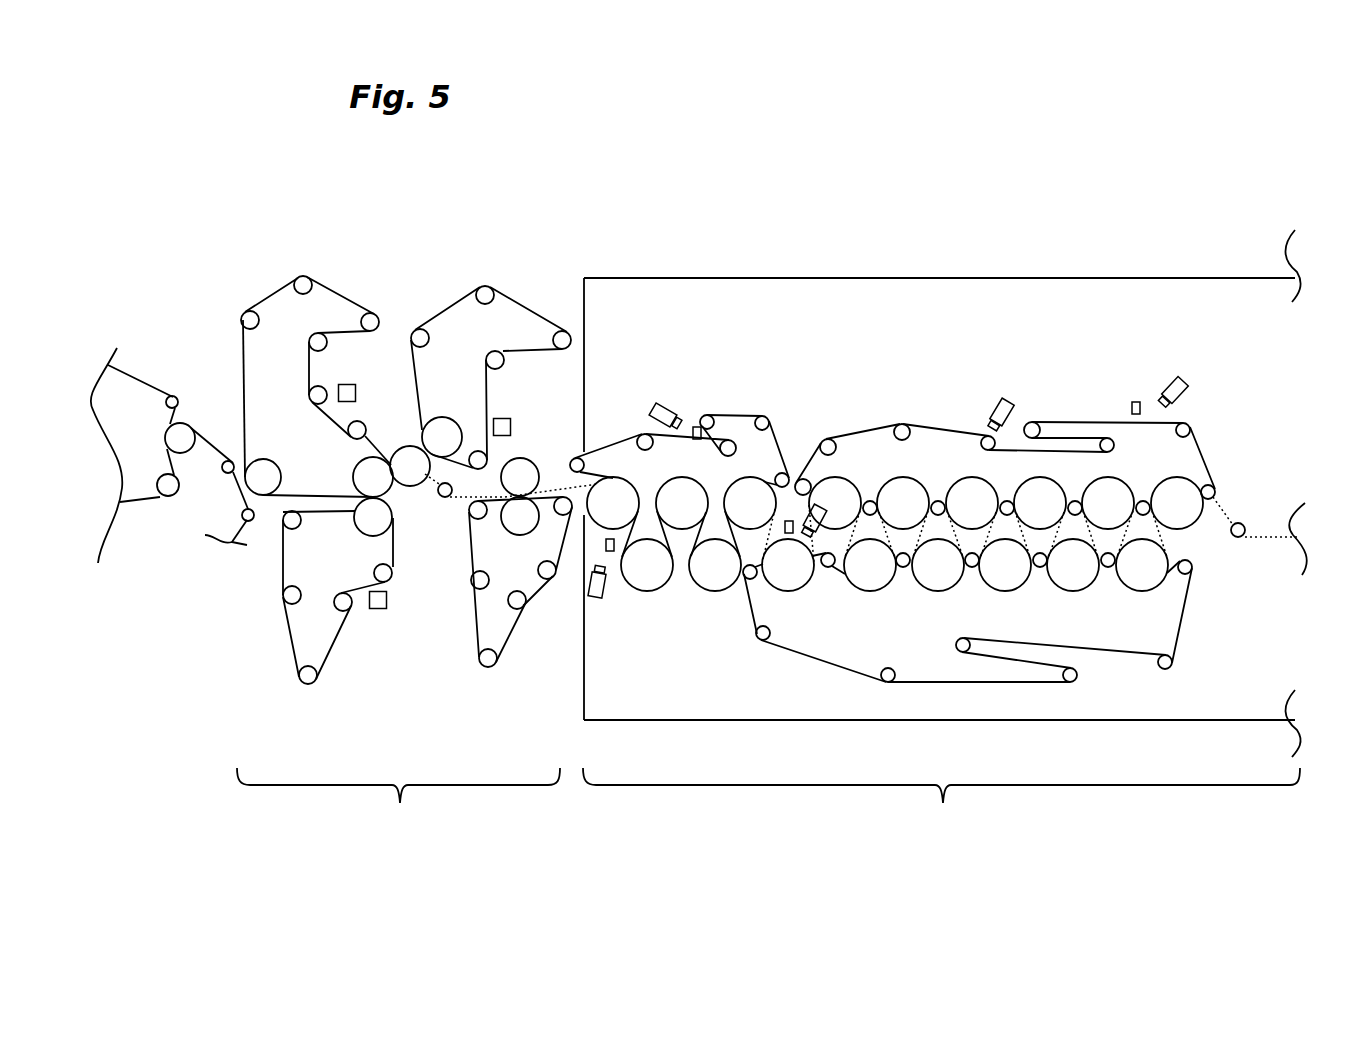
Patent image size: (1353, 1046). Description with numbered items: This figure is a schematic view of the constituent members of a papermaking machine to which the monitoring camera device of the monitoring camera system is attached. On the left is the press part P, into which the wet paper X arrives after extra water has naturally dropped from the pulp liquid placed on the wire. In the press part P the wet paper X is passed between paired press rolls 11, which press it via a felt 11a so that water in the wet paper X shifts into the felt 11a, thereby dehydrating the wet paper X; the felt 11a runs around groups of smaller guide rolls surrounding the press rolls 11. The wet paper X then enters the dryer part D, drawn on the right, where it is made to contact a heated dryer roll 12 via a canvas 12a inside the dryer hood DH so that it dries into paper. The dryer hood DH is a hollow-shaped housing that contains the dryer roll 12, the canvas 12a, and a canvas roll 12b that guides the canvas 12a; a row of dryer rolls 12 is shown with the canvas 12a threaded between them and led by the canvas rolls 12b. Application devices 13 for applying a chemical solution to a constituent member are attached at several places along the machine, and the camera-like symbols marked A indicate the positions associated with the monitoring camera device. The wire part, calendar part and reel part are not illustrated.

The press roll 11 is at (352, 477).
The felt 11a is at (277, 292).
The application device 13 is at (356, 393).
The dryer roll 12 is at (903, 478).
The canvas 12a is at (863, 432).
The canvas roll 12b is at (727, 416).
The camera / inspection device A is at (664, 402).
The wet paper X is at (458, 500).
The dryer hood DH is at (750, 278).
The press part P is at (398, 805).
The dryer part D is at (941, 806).